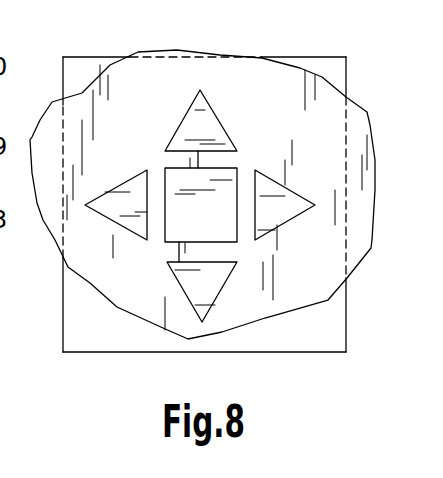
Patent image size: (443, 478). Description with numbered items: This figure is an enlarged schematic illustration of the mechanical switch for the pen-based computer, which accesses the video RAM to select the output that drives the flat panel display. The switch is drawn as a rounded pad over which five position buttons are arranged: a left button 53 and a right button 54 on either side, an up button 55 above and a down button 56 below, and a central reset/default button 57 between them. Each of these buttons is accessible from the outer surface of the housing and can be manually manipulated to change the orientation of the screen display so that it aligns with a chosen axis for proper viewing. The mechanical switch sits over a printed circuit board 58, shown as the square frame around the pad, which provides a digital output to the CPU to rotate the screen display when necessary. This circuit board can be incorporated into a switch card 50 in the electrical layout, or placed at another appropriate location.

The switch card 50 is at (247, 100).
The left button 53 is at (127, 192).
The right button 54 is at (280, 207).
The up button 55 is at (197, 126).
The down button 56 is at (202, 287).
The reset/default button 57 is at (218, 187).
The printed circuit board 58 is at (349, 308).